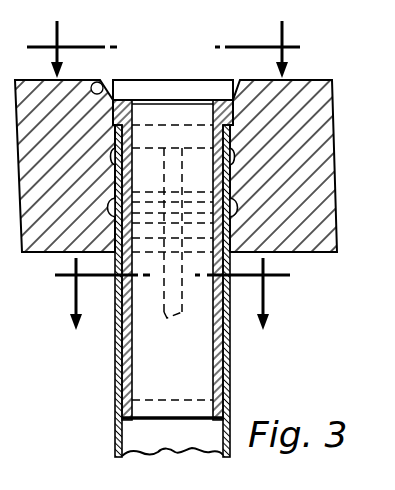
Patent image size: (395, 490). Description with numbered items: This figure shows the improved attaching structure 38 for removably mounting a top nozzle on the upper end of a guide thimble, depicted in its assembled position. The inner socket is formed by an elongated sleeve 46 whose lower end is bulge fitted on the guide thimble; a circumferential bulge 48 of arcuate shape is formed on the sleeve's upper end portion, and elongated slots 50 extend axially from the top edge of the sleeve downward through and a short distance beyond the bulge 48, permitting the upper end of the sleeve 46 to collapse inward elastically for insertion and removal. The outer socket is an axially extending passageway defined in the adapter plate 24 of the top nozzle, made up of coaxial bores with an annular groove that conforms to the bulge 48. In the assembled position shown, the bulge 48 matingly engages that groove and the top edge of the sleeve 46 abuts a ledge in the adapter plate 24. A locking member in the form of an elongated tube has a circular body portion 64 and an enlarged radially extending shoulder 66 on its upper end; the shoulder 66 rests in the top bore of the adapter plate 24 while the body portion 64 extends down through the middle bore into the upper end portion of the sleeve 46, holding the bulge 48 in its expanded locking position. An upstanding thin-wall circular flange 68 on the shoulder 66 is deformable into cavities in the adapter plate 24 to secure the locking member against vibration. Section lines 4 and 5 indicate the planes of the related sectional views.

The section line 4- 4 is at (163, 40).
The section line 5- 5 is at (165, 294).
The adapter plate 24 is at (310, 253).
The attaching structure 38 is at (317, 80).
The sleeve 46 is at (115, 406).
The circumferential bulge 48 is at (46, 258).
The elongated slots 50 is at (167, 318).
The body portion 64 is at (212, 343).
The shoulder 66 is at (100, 125).
The circular flange 68 is at (98, 82).